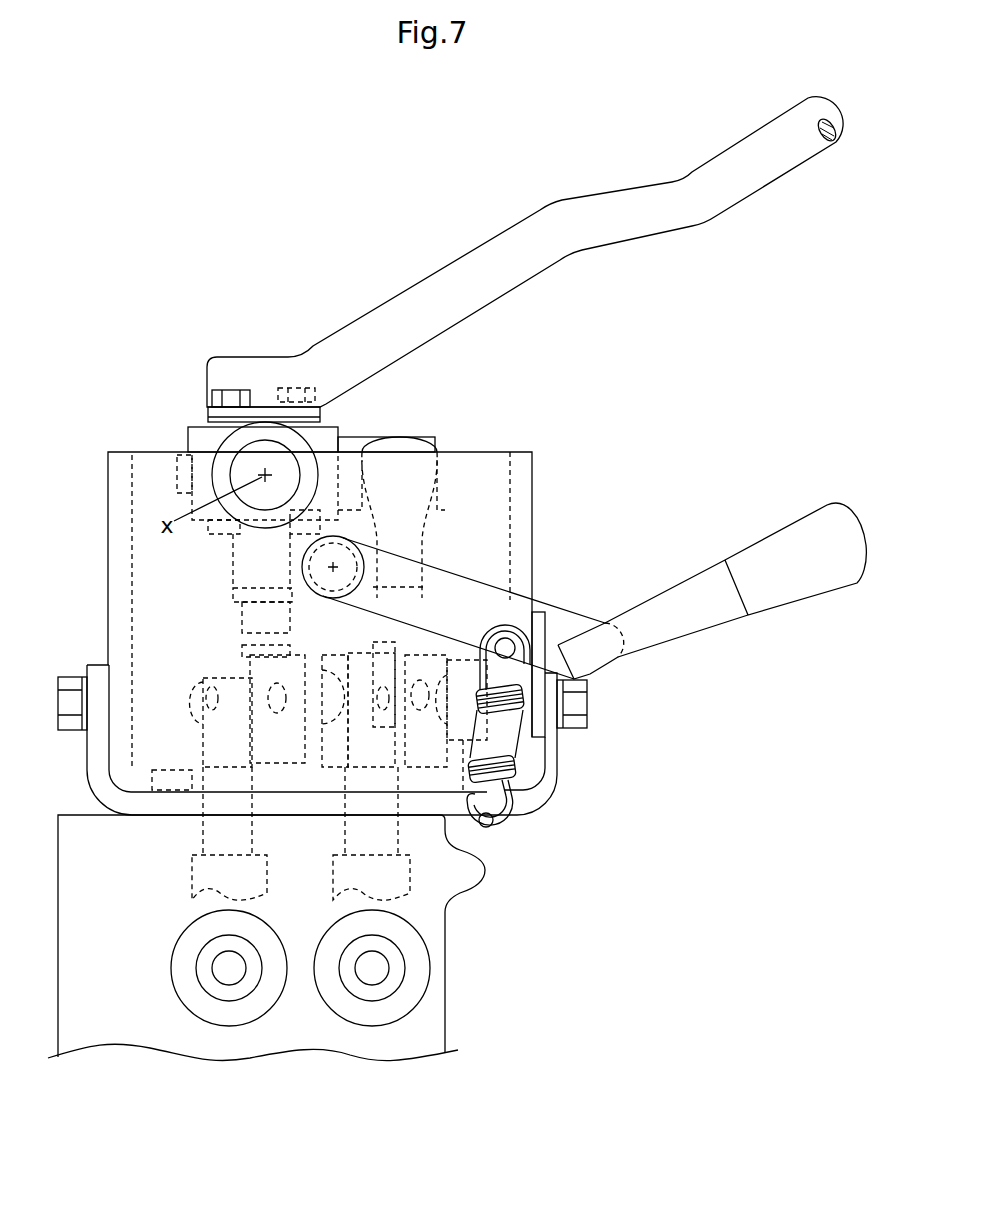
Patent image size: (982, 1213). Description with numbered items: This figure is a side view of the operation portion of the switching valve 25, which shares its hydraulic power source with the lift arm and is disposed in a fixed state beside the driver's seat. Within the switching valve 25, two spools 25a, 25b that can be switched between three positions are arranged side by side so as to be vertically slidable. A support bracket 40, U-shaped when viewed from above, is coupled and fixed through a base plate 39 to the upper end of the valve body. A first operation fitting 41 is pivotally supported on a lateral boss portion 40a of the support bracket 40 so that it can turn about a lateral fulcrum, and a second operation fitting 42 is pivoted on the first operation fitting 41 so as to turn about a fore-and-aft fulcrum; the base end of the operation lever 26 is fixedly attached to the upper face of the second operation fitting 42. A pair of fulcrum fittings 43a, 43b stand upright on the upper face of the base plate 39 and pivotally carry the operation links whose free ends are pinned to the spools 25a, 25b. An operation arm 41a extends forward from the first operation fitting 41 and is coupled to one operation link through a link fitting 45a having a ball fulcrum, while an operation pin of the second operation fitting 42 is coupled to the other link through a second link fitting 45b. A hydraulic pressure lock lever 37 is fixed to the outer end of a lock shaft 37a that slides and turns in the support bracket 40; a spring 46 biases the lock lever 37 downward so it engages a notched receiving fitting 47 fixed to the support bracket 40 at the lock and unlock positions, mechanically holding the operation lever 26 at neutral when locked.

The operation lever 26 is at (621, 196).
The second operation fitting 42 is at (208, 421).
The first operation fitting 41 is at (192, 440).
The operation arm 41a is at (430, 437).
The lateral boss portion 40a is at (216, 475).
The support bracket 40 is at (535, 468).
The link fitting 45a is at (398, 443).
The link fitting 45b is at (243, 625).
The fulcrum fitting 43b is at (297, 658).
The fulcrum fitting 43a is at (433, 658).
The lock shaft 37a is at (318, 567).
The hydraulic pressure lock lever 37 is at (771, 530).
The notched receiving fitting 47 is at (548, 628).
The base plate 39 is at (557, 758).
The spring 46 is at (517, 775).
The switching valve 25 is at (458, 981).
The spool 25b is at (192, 875).
The spool 25a is at (410, 872).